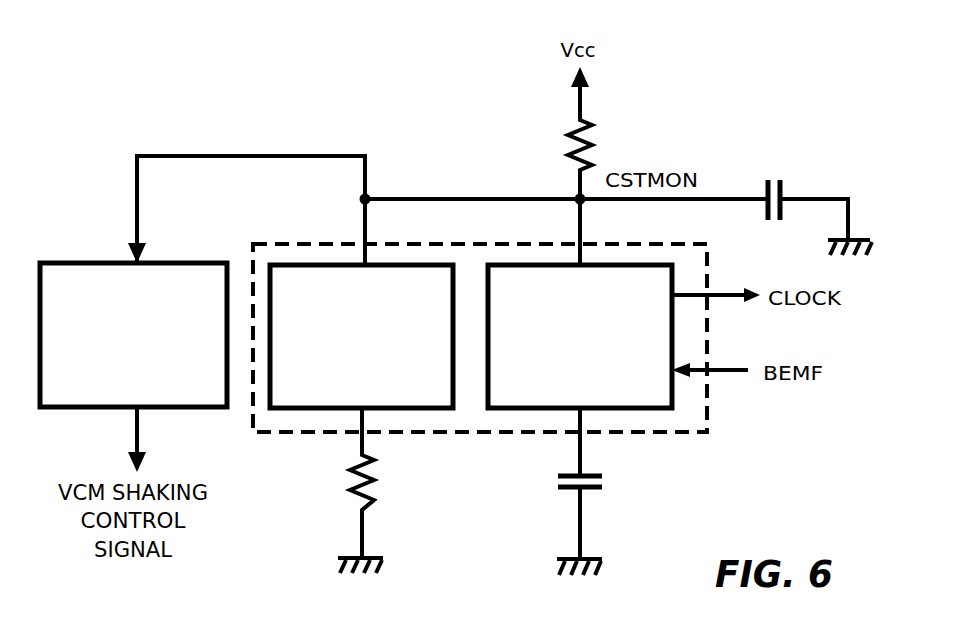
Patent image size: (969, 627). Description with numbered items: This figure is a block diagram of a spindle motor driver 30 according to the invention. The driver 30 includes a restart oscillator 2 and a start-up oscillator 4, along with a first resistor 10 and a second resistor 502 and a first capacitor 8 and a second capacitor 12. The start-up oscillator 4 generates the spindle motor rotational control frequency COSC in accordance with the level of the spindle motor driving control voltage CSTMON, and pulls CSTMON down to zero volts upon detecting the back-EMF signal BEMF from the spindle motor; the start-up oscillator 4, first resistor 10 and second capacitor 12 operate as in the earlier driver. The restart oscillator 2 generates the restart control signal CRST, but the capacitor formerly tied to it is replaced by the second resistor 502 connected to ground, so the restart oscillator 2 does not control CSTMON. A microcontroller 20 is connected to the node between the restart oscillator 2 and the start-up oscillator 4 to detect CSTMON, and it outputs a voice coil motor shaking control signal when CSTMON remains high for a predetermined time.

The microcontroller 20 is at (70, 262).
The restart oscillator 2 is at (290, 263).
The start-up oscillator 4 is at (507, 252).
The spindle motor driver 30 is at (680, 436).
The first resistor 10 is at (570, 140).
The second capacitor 12 is at (772, 222).
The second resistor 502 is at (350, 488).
The first capacitor 8 is at (555, 482).